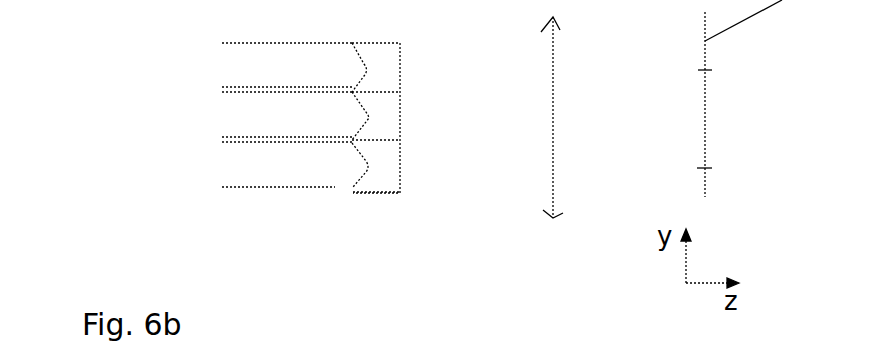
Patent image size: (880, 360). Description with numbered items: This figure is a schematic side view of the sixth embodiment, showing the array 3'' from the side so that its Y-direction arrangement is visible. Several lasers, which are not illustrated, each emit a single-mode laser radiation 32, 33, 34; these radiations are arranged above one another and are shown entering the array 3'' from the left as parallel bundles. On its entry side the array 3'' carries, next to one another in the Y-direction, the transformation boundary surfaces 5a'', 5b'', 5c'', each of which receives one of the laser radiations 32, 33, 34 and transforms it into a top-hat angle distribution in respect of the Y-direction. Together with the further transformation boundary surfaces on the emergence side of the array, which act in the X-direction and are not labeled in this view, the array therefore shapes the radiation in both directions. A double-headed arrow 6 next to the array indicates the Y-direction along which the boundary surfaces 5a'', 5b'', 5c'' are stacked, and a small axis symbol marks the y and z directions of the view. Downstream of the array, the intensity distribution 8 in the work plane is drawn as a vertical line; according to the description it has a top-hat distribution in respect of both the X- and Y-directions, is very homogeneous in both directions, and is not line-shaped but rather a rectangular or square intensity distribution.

The laser radiation 32 is at (275, 59).
The laser radiation 33 is at (251, 122).
The laser radiation 34 is at (255, 162).
The transformation boundary surface 5a'' is at (338, 46).
The transformation boundary surface 5b'' is at (333, 116).
The transformation boundary surface 5c'' is at (331, 192).
The array 3'' is at (423, 148).
The direction of movement 6 is at (555, 62).
The intensity distribution 8 is at (707, 108).